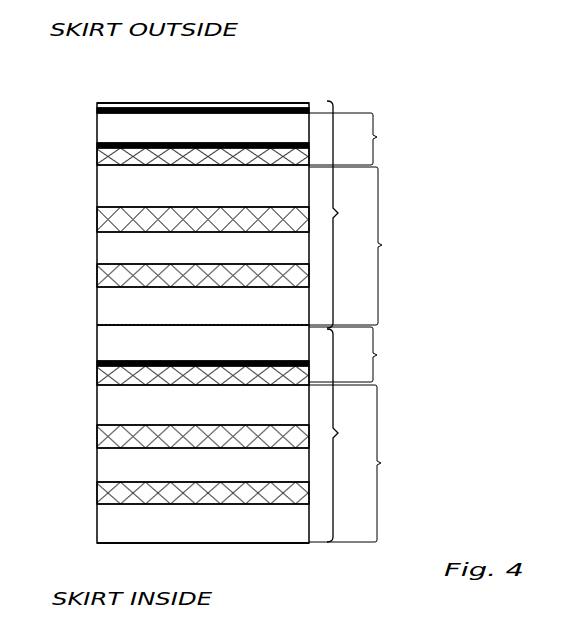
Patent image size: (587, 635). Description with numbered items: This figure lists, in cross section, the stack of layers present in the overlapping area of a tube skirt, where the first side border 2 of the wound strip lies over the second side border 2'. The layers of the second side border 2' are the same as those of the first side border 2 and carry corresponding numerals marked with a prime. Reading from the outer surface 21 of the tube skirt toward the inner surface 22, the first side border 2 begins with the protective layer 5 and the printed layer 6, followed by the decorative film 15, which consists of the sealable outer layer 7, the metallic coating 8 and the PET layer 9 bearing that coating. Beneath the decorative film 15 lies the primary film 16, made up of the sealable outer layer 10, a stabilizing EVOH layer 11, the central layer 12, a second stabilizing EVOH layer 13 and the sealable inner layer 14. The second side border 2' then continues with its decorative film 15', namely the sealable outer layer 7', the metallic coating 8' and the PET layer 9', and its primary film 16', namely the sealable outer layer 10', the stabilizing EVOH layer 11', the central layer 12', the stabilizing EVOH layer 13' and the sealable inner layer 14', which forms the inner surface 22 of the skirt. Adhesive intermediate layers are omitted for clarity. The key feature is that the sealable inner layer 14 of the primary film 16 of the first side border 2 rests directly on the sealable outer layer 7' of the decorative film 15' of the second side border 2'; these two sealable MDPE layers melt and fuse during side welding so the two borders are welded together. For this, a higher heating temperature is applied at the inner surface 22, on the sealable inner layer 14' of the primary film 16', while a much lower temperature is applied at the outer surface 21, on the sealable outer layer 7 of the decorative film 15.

The first side border 2 is at (339, 214).
The second side border 2' is at (340, 435).
The protective layer 5 is at (97, 106).
The printed layer 6 is at (97, 110).
The sealable outer layer of the decorative film 7 is at (183, 128).
The sealable outer layer of the decorative film 7' is at (178, 343).
The metallic coating 8 is at (172, 145).
The metallic coating 8' is at (168, 364).
The PET layer 9 is at (183, 160).
The PET layer 9' is at (178, 380).
The sealable outer layer of the primary film 10 is at (166, 186).
The sealable outer layer of the primary film 10' is at (163, 405).
The stabilizing EVOH layer 11 is at (177, 219).
The stabilizing EVOH layer 11' is at (173, 436).
The central layer 12 is at (166, 248).
The central layer 12' is at (163, 465).
The stabilizing EVOH layer 13 is at (176, 275).
The stabilizing EVOH layer 13' is at (173, 493).
The sealable inner layer of the primary film 14 is at (176, 306).
The sealable inner layer of the primary film 14' is at (173, 523).
The decorative film 15 is at (357, 139).
The decorative film 15' is at (358, 354).
The primary film 16 is at (360, 246).
The primary film 16' is at (361, 463).
The outer surface 21 is at (273, 104).
The inner surface 22 is at (272, 545).